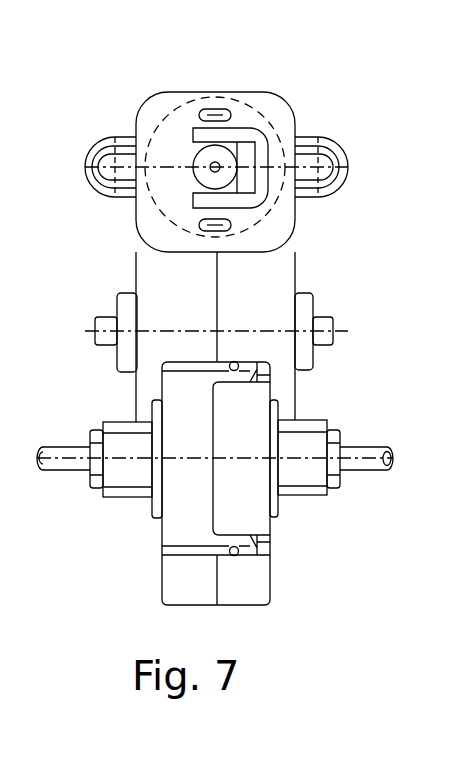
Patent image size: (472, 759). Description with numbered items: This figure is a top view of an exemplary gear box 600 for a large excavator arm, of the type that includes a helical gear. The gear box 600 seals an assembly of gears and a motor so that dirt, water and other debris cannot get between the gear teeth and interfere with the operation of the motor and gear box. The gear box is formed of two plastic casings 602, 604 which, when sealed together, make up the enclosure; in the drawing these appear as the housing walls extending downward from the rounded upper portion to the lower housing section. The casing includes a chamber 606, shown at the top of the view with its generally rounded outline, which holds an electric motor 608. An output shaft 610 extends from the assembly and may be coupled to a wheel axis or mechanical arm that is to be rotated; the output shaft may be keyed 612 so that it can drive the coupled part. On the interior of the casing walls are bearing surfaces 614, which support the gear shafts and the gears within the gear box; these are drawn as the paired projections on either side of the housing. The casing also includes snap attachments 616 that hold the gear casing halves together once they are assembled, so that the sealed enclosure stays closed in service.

The gear box 600 is at (275, 90).
The plastic casing 602 is at (287, 262).
The plastic casing 604 is at (135, 270).
The chamber 606 is at (168, 107).
The electric motor 608 is at (193, 102).
The output shaft 610 is at (367, 467).
The key 612 is at (332, 430).
The bearing surfaces 614 is at (327, 315).
The snap attachments 616 is at (272, 133).